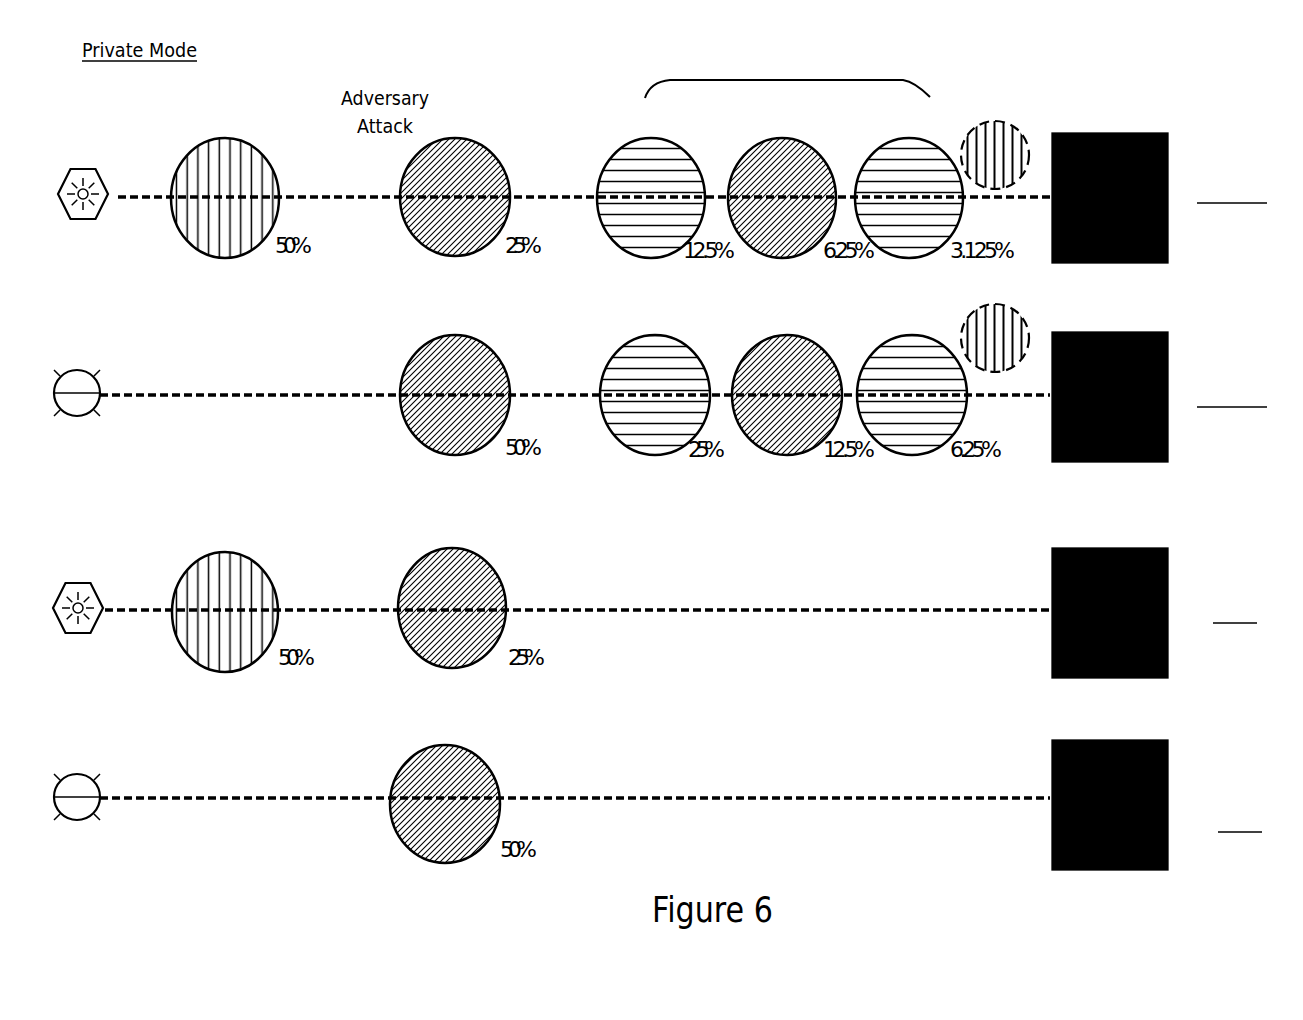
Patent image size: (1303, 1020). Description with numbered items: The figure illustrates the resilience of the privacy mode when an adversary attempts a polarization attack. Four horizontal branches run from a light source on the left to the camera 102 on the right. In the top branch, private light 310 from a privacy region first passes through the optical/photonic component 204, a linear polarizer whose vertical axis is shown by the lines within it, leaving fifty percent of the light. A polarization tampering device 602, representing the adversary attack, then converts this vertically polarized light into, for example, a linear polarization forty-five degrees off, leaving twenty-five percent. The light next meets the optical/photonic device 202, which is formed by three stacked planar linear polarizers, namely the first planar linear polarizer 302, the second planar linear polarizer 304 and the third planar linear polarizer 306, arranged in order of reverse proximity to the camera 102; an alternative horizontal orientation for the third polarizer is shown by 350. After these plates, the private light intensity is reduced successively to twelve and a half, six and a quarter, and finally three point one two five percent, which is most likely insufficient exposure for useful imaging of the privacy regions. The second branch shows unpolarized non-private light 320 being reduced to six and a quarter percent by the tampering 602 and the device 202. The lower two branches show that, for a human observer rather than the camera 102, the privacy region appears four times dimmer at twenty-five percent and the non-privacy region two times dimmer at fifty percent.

The camera 102 is at (1225, 173).
The optical/photonic device 202 is at (787, 80).
The optical/photonic component 204 is at (250, 132).
The first planar linear polarizer 302 is at (665, 127).
The second planar linear polarizer 304 is at (797, 127).
The third planar linear polarizer 306 is at (925, 127).
The private light 310 is at (95, 170).
The non-private light 320 is at (80, 370).
The alternative polarization axis of third planar linear polarizer 350 is at (995, 121).
The polarization tampering device 602 is at (458, 138).